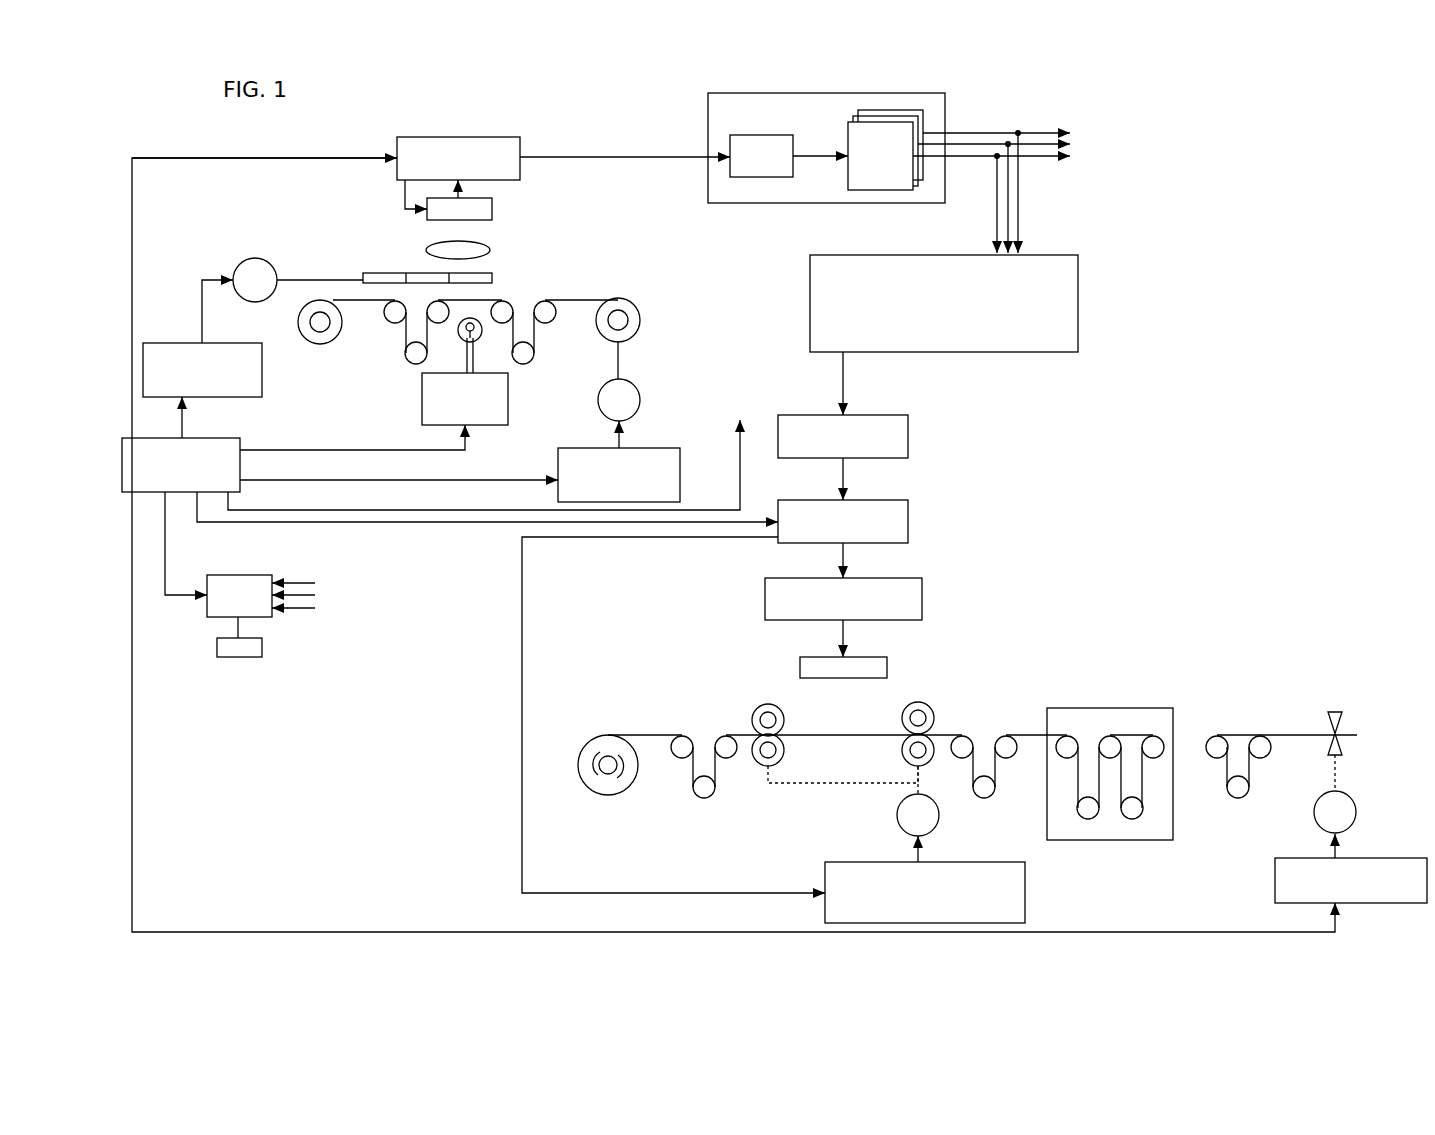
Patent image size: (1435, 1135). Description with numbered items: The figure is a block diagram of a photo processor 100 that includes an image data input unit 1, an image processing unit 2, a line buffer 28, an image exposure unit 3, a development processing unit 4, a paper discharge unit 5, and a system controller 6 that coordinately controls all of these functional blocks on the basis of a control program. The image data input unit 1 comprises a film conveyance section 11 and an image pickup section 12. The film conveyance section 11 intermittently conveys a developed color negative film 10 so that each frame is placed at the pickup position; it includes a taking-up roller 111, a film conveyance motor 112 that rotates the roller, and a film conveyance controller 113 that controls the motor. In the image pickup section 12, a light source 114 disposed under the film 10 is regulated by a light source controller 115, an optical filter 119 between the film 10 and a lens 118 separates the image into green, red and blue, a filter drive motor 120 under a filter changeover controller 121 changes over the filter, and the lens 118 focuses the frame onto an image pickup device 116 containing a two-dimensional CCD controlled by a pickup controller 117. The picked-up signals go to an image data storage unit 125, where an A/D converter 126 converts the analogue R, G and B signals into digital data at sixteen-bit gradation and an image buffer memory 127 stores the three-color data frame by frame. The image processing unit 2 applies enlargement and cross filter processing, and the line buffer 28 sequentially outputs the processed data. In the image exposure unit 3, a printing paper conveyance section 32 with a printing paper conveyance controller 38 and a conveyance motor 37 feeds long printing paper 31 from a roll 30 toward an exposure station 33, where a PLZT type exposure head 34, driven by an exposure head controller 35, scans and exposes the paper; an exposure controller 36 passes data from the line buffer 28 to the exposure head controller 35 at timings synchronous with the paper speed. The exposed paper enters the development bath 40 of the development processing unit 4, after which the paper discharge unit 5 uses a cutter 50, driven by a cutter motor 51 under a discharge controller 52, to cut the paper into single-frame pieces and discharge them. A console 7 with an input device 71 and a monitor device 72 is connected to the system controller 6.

The photo processor 100 is at (1168, 162).
The image data input unit 1 is at (392, 238).
The image processing unit 2 is at (1105, 248).
The image exposure unit 3 is at (917, 687).
The development processing unit 4 is at (1115, 682).
The paper discharge unit 5 is at (1335, 688).
The system controller 6 is at (242, 443).
The console 7 is at (625, 418).
The color negative film 10 is at (355, 301).
The film conveyance section 11 is at (388, 370).
The image pickup section 12 is at (572, 228).
The line buffer 28 is at (908, 435).
The roll 30 is at (602, 758).
The printing paper 31 is at (650, 727).
The printing paper conveyance section 32 is at (860, 798).
The exposure station 33 is at (840, 724).
The exposure head 34 is at (887, 665).
The exposure head controller 35 is at (922, 593).
The exposure controller 36 is at (908, 520).
The conveyance motor 37 is at (939, 815).
The printing paper conveyance controller 38 is at (1027, 872).
The development bath 40 is at (1080, 708).
The cutter 50 is at (1343, 727).
The cutter motor 51 is at (1357, 802).
The discharge controller 52 is at (1275, 883).
The input device 71 is at (263, 647).
The monitor device 72 is at (203, 608).
The taking-up roller 111 is at (637, 305).
The film conveyance motor 112 is at (641, 395).
The film conveyance controller 113 is at (682, 467).
The light source 114 is at (482, 334).
The light source controller 115 is at (422, 388).
The image pickup device 116 is at (493, 209).
The pickup controller 117 is at (507, 135).
The lens 118 is at (490, 250).
The optical filter 119 is at (492, 278).
The filter drive motor 120 is at (255, 258).
The filter changeover controller 121 is at (170, 343).
The image data storage unit 125 is at (945, 113).
The A/D converter 126 is at (785, 133).
The image buffer memory 127 is at (868, 192).